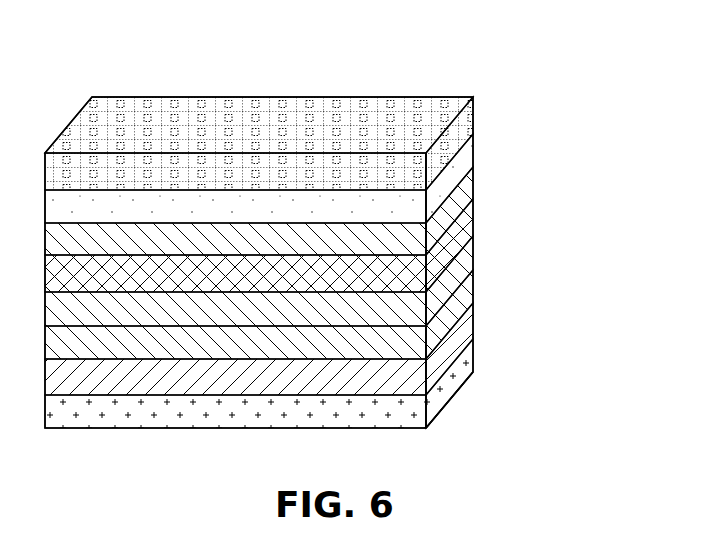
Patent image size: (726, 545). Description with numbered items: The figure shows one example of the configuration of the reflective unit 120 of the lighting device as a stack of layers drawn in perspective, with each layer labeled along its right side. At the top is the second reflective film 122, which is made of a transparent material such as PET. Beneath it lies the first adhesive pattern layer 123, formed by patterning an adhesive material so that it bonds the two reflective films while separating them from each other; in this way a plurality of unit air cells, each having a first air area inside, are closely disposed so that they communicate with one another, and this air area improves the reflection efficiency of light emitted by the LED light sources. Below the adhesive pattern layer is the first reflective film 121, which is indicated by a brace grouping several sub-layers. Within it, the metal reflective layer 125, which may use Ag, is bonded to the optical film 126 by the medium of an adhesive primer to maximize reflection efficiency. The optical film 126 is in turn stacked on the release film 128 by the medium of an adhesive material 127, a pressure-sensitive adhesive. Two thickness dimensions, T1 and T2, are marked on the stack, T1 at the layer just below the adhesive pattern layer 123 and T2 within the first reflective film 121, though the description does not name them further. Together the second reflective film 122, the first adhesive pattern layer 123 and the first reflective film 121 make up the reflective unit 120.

The reflective unit 120 is at (84, 30).
The second reflective film 122 is at (458, 126).
The first adhesive pattern layer 123 is at (458, 157).
The first thickness layer T1 is at (458, 190).
The metal reflective layer 125 is at (458, 226).
The second thickness layer T2 is at (458, 259).
The optical film 126 is at (458, 296).
The adhesive material 127 is at (458, 330).
The release film 128 is at (307, 383).
The first reflective film 121 is at (332, 332).